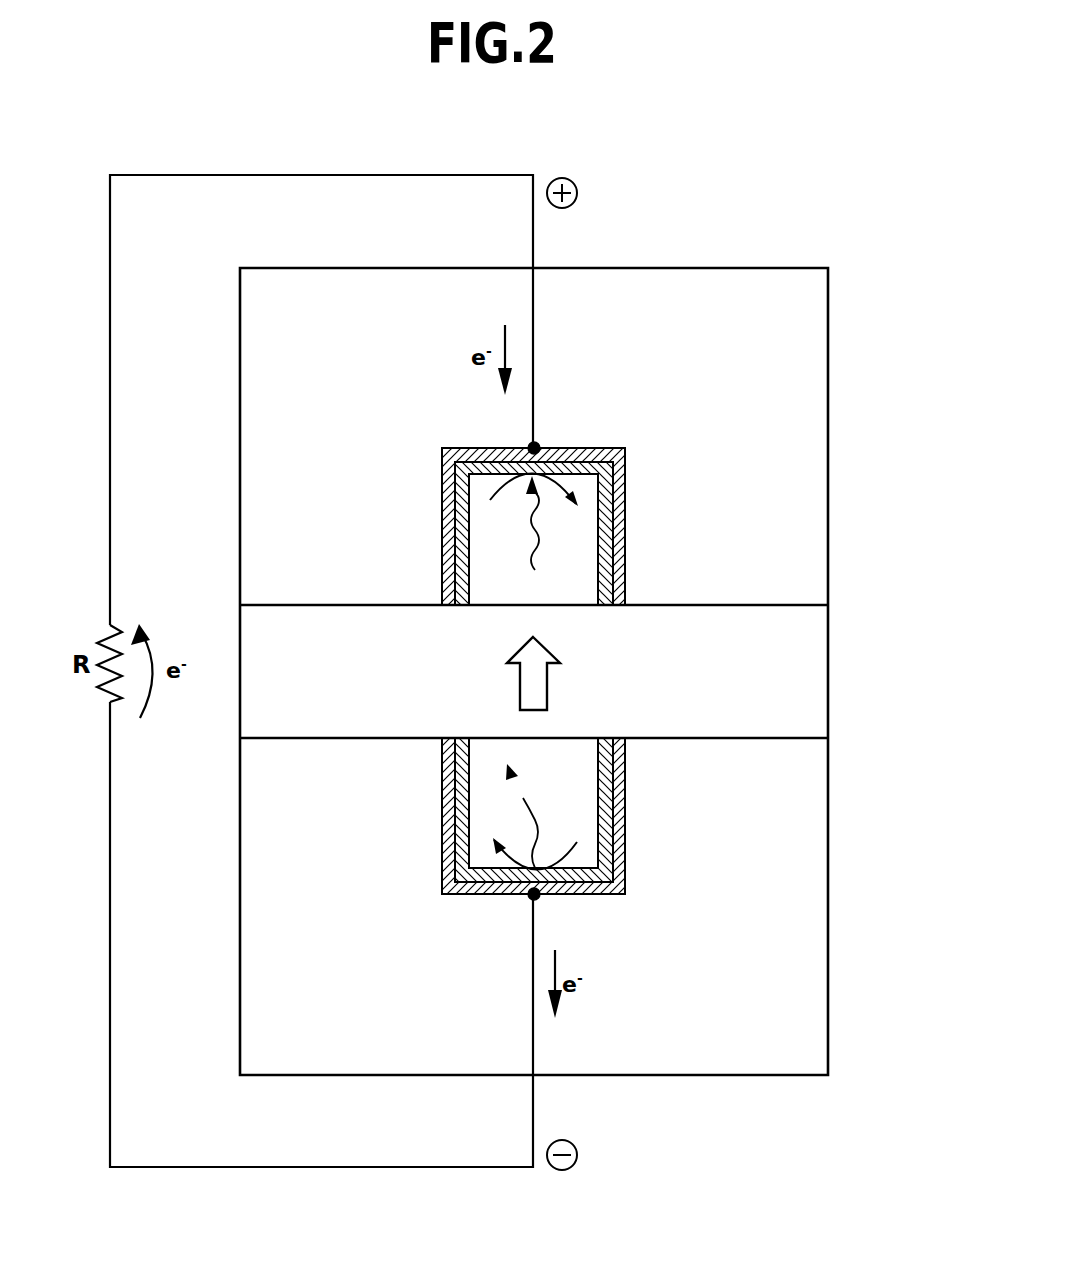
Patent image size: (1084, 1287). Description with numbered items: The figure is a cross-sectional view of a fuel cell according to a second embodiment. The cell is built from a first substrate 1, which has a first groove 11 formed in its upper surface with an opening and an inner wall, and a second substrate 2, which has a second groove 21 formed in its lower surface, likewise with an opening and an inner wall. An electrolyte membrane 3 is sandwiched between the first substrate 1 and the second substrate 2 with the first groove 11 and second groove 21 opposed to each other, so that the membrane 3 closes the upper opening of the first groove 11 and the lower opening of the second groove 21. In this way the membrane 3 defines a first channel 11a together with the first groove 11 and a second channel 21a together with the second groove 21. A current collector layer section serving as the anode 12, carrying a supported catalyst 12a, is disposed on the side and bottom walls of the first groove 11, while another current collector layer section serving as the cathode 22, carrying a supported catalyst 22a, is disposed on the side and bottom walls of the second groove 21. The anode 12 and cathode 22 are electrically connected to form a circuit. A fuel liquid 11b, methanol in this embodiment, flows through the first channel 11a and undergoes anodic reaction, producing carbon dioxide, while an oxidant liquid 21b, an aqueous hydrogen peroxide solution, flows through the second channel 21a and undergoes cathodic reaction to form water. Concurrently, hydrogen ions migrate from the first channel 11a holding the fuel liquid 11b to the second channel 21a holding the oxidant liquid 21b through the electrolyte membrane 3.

The first substrate 1 is at (777, 1065).
The second substrate 2 is at (777, 295).
The electrolyte membrane 3 is at (767, 670).
The first groove 11 is at (684, 845).
The first channel 11a is at (573, 752).
The fuel liquid 11b is at (585, 855).
The current collector layer section (anode) 12 is at (620, 808).
The catalyst 12a is at (618, 762).
The second groove 21 is at (682, 498).
The second channel 21a is at (573, 592).
The oxidant liquid 21b is at (587, 487).
The current collector layer section (cathode) 22 is at (620, 533).
The catalyst 22a is at (612, 580).